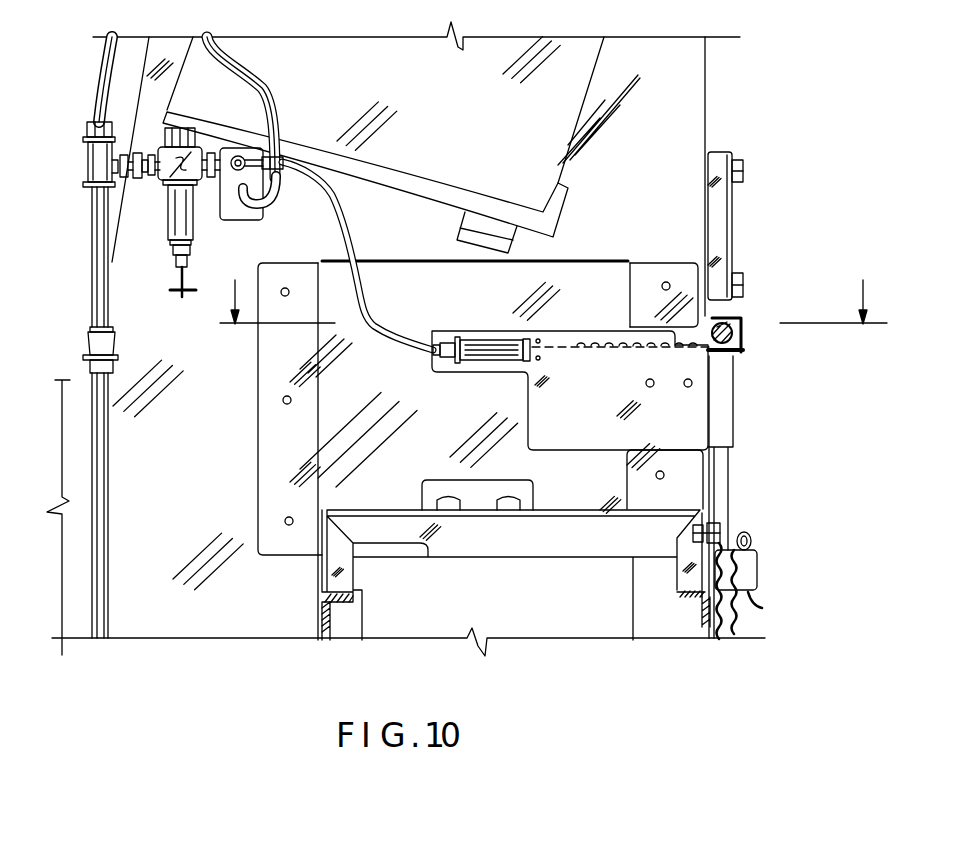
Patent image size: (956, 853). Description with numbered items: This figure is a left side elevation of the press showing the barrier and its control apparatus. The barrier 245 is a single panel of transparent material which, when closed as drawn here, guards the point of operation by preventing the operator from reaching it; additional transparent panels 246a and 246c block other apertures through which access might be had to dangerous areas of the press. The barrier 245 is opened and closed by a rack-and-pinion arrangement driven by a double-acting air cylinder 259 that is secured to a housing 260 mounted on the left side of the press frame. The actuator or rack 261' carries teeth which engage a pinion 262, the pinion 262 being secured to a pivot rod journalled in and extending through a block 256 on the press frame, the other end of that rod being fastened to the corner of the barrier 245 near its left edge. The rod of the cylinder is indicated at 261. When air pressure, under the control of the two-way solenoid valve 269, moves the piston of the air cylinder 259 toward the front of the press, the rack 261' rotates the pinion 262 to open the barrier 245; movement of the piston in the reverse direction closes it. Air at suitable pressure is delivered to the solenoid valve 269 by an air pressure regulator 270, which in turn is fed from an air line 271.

The air line 271 is at (90, 249).
The air pressure regulator 270 is at (170, 217).
The two-way solenoid valve 269 is at (227, 222).
The transparent panel 246a is at (733, 227).
The block 256 is at (727, 316).
The pinion 262 is at (733, 333).
The actuator (rack) 261' is at (782, 374).
The piston rod 261 is at (621, 377).
The double-acting air cylinder 259 is at (478, 367).
The housing 260 is at (575, 437).
The barrier 245 is at (740, 495).
The transparent panel 246c is at (297, 538).